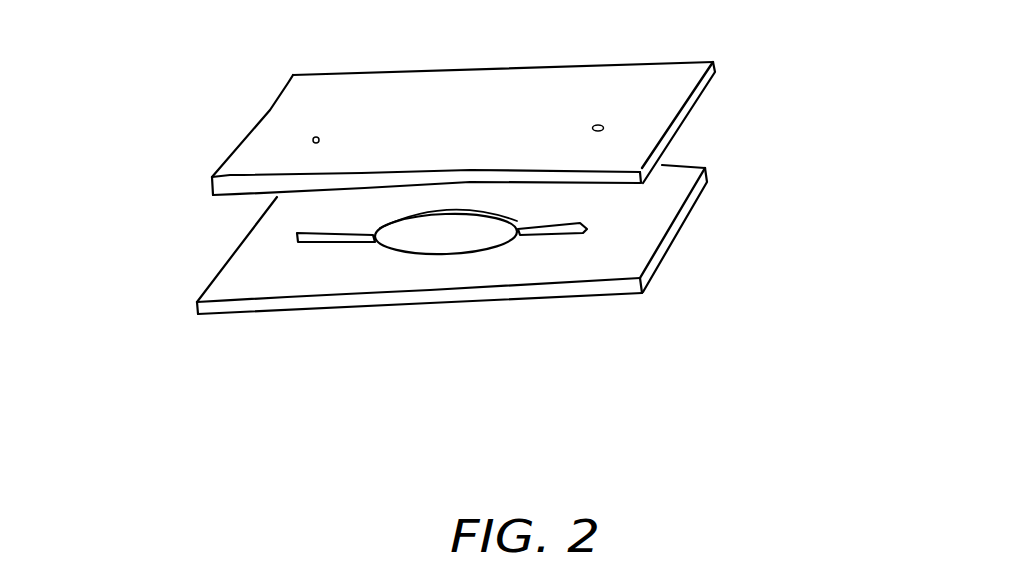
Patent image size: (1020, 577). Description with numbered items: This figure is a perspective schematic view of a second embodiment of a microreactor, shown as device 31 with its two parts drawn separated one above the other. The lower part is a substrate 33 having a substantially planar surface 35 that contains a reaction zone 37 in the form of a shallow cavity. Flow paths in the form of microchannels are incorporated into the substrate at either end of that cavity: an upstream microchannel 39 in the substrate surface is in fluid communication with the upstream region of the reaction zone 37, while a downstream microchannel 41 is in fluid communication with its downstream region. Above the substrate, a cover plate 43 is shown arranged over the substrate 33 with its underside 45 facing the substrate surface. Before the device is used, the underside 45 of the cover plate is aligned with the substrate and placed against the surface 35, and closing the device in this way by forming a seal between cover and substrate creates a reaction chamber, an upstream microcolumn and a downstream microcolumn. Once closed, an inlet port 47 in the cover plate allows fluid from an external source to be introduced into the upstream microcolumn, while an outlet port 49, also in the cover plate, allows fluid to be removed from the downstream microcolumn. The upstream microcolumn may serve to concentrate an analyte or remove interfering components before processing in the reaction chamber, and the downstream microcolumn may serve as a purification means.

The device 31 is at (847, 63).
The substrate 33 is at (682, 210).
The substantially planar surface 35 is at (592, 260).
The reaction zone 37 is at (405, 238).
The upstream microchannel 39 is at (310, 243).
The downstream microchannel 41 is at (545, 235).
The cover plate 43 is at (688, 113).
The underside 45 is at (683, 133).
The inlet port 47 is at (318, 136).
The outlet port 49 is at (602, 123).